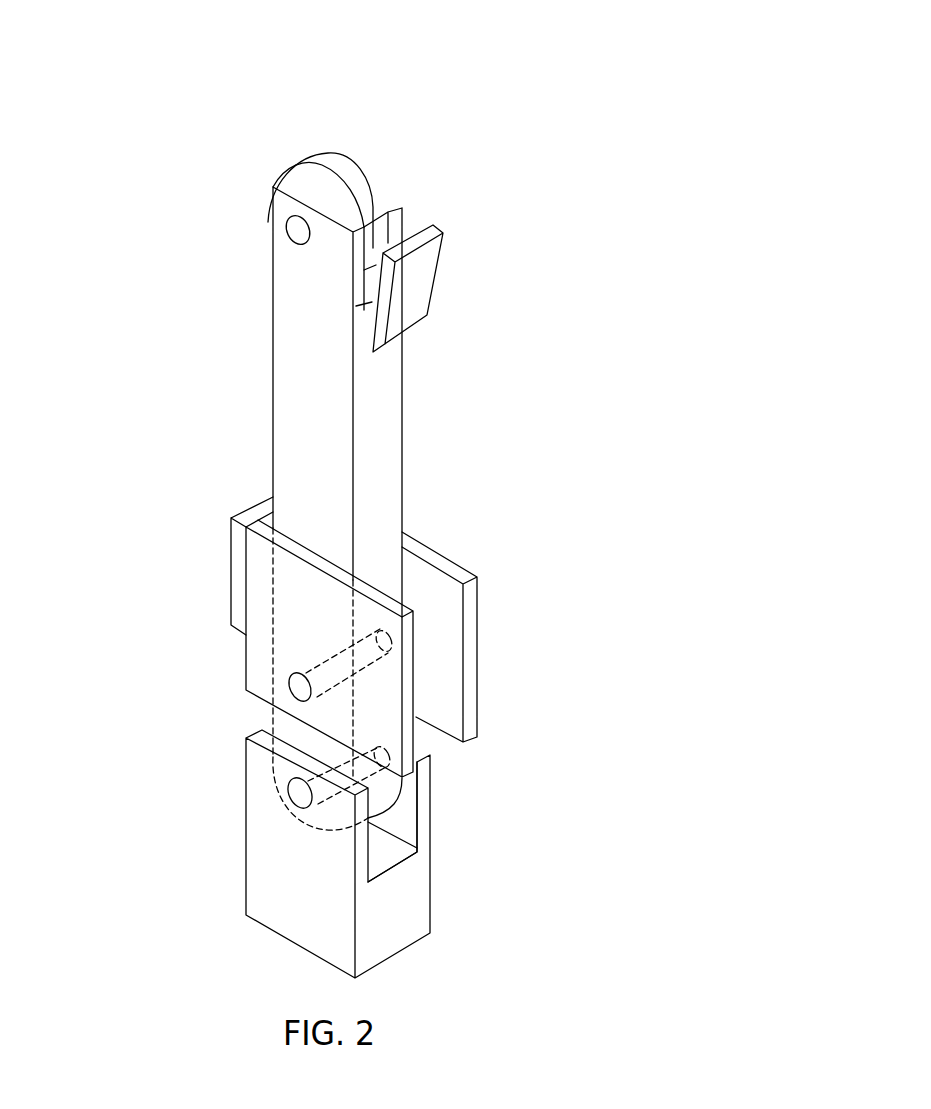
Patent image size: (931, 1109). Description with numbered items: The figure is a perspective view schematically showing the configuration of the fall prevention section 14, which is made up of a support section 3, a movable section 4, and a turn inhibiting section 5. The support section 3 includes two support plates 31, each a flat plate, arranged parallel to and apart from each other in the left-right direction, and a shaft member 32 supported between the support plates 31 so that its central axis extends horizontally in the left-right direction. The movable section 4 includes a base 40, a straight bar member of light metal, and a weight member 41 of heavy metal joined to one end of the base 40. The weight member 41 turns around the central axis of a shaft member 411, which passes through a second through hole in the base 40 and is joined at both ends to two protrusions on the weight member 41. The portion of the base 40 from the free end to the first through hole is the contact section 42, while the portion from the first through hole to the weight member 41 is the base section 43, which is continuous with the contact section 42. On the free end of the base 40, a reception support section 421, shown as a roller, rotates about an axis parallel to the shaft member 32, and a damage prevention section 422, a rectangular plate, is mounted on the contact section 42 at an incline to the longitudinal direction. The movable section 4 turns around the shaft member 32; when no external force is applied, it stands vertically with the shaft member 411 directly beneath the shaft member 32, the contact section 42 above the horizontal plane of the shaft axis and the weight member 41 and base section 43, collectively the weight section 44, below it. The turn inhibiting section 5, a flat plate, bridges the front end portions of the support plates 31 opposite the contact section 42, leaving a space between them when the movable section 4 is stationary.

The fall prevention section 14 is at (59, 45).
The support section 3 is at (461, 641).
The support plate 31 is at (452, 556).
The shaft member 32 is at (416, 645).
The movable section 4 is at (305, 513).
The base 40 is at (305, 448).
The weight member 41 is at (349, 854).
The shaft member 411 is at (410, 760).
The contact section 42 is at (406, 414).
The reception support section 421 is at (327, 167).
The damage prevention section 422 is at (427, 268).
The base section 43 is at (278, 720).
The weight section 44 is at (418, 899).
The turn inhibiting section 5 is at (237, 571).